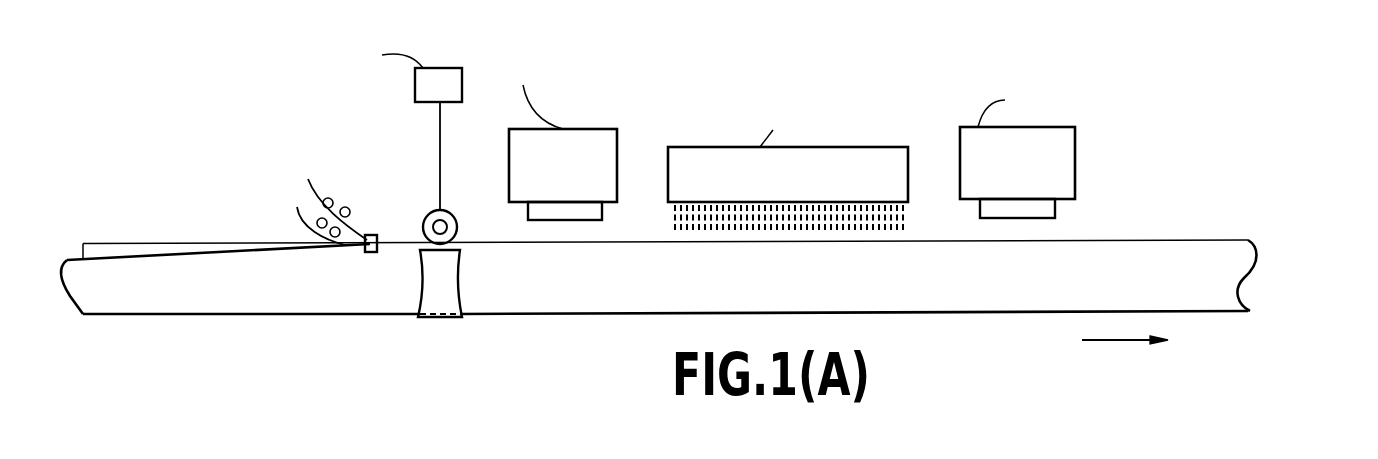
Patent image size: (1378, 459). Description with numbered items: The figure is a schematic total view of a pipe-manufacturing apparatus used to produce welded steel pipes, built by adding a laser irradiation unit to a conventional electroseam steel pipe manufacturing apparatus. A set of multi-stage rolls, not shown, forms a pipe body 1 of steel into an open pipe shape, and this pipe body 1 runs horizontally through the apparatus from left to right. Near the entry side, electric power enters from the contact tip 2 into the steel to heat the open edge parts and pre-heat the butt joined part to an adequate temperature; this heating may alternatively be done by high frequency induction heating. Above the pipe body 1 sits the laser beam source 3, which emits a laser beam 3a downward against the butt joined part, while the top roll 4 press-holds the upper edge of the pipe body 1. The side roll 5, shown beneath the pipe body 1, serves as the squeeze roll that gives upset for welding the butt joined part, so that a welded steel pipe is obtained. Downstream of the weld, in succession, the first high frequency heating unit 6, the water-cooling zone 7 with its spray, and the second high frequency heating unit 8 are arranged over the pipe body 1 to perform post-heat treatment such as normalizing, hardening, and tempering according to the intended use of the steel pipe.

The pipe body 1 is at (165, 314).
The contact tip 2 is at (372, 235).
The laser beam source 3 is at (415, 90).
The laser beam 3a is at (440, 152).
The top roll 4 is at (433, 211).
The side roll 5 is at (435, 317).
The first high frequency heating unit 6 is at (617, 182).
The water-cooling zone 7 is at (908, 175).
The second high frequency heating unit 8 is at (1075, 170).